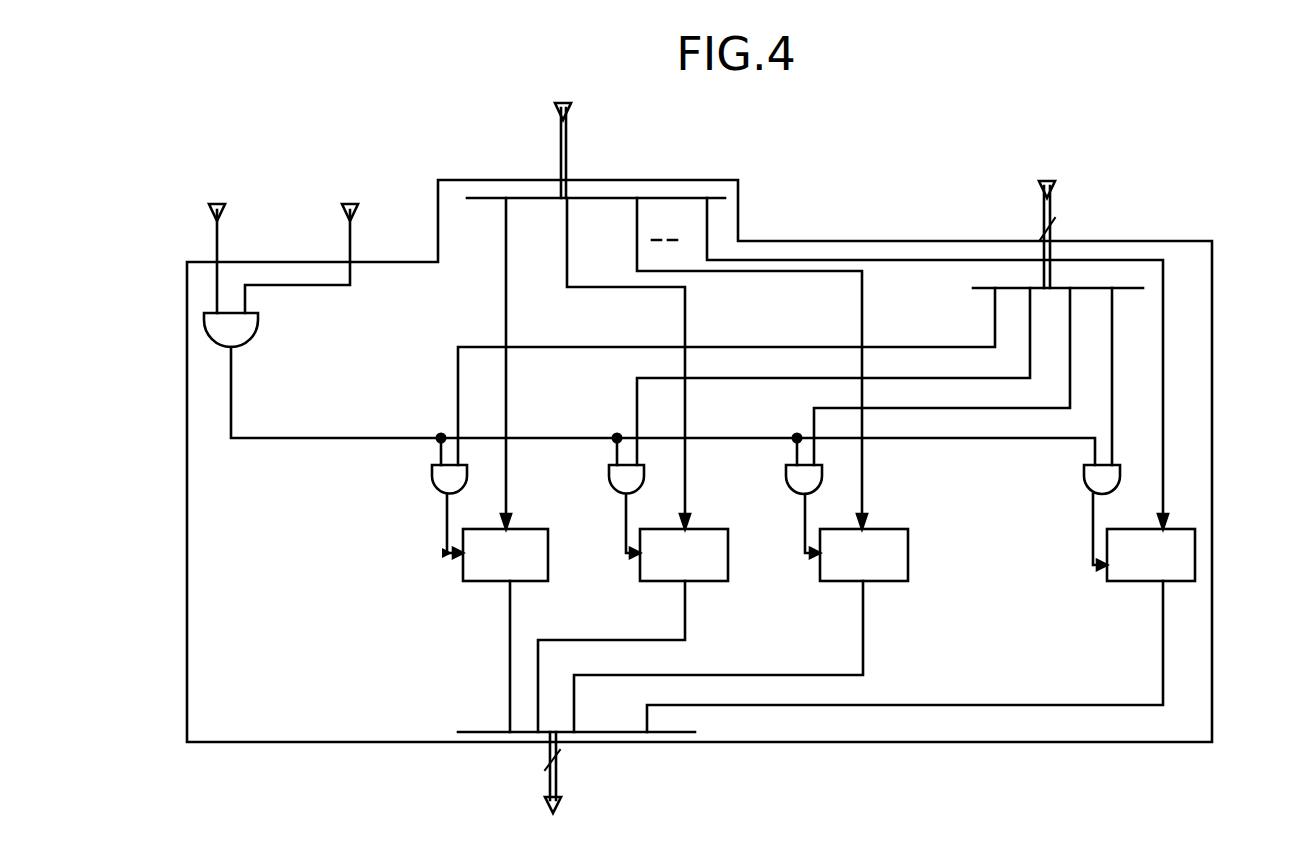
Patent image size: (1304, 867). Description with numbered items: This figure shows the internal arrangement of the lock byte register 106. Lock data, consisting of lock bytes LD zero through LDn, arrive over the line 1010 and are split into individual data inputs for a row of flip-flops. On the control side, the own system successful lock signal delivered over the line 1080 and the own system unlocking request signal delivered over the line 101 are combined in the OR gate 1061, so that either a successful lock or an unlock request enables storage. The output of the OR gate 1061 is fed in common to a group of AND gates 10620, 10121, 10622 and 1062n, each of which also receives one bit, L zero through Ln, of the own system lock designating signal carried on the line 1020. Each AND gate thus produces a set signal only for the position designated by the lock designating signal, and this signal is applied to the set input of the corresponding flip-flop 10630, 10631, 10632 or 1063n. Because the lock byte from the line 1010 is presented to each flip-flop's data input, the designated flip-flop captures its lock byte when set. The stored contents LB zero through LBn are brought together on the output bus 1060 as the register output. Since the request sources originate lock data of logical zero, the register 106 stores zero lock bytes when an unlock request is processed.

The line 1010 is at (566, 163).
The line 1080 is at (222, 225).
The line 101 is at (365, 245).
The OR gate 1061 is at (258, 326).
The line 1020 is at (1052, 204).
The lock byte register 106 is at (1212, 250).
The AND gate 10620 is at (432, 481).
The AND gate 10121 is at (609, 476).
The AND gate 10622 is at (786, 487).
The AND gate 1062n is at (1084, 472).
The F/F 10630 is at (482, 582).
The F/F 10631 is at (655, 582).
The F/F 10632 is at (838, 582).
The F/F 1063n is at (1106, 582).
The output bus LB0~n 1060 is at (556, 795).